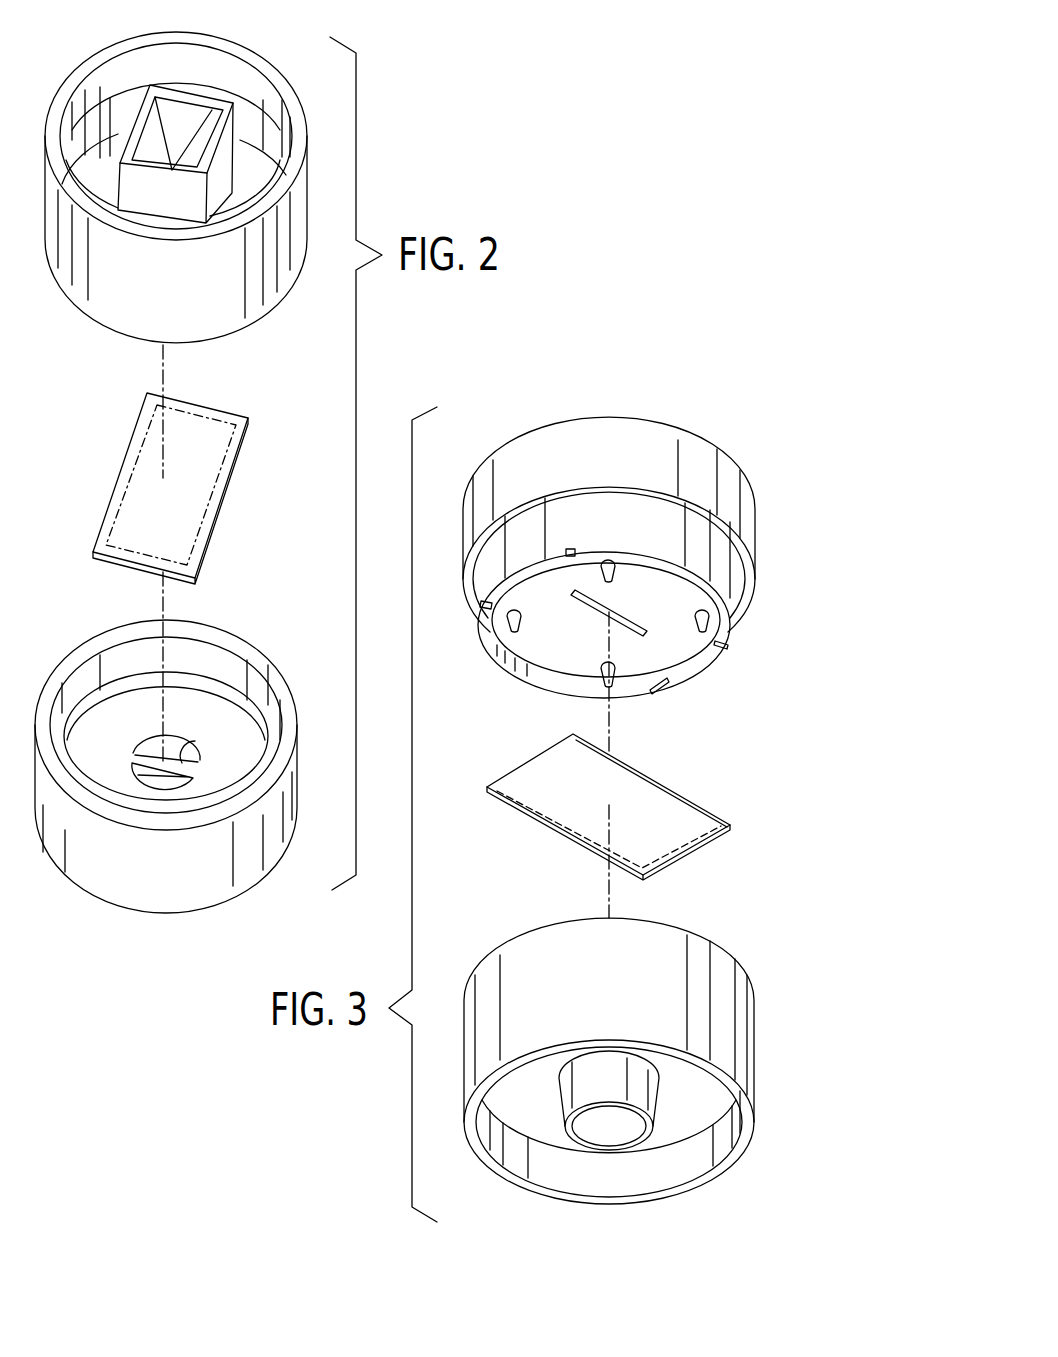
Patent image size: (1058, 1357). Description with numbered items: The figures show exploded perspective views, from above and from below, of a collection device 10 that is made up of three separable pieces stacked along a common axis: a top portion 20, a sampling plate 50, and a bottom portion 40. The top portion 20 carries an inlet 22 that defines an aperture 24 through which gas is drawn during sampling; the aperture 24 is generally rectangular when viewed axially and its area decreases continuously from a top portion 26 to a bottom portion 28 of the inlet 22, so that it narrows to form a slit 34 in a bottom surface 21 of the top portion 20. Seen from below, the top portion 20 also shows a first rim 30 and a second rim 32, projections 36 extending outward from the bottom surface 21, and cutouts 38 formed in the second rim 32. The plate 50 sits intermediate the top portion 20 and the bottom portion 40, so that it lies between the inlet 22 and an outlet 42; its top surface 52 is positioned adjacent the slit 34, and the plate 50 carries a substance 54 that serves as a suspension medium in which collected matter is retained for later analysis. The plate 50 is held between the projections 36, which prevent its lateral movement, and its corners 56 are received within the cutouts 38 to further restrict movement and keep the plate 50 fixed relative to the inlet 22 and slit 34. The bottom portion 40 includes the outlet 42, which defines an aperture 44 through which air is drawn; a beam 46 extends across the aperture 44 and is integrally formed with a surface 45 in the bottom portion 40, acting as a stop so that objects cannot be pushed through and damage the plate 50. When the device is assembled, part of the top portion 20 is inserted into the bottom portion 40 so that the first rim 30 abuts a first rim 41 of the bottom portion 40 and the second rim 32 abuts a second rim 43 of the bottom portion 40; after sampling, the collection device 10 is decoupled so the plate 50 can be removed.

In FIG. 2, the collection device 10 is at (96, 937).
In FIG. 3, the collection device 10 is at (644, 388).
In FIG. 2, the top portion 20 is at (178, 177).
In FIG. 3, the top portion 20 is at (608, 566).
In FIG. 2, the surface 21 is at (103, 180).
In FIG. 2, the inlet 22 is at (248, 138).
In FIG. 2, the aperture 24 is at (188, 118).
In FIG. 2, the top portion 26 is at (138, 122).
In FIG. 2, the bottom portion 28 is at (232, 150).
In FIG. 3, the first rim 30 is at (608, 625).
In FIG. 3, the second rim 32 is at (560, 695).
In FIG. 3, the slit 34 is at (600, 612).
In FIG. 3, the projections 36 is at (507, 623).
In FIG. 3, the cutouts 38 is at (570, 552).
In FIG. 2, the bottom portion 40 is at (175, 774).
In FIG. 3, the bottom portion 40 is at (607, 1061).
In FIG. 2, the first rim 41 is at (226, 638).
In FIG. 3, the outlet 42 is at (575, 1092).
In FIG. 2, the second rim 43 is at (235, 700).
In FIG. 2, the aperture 44 is at (191, 691).
In FIG. 3, the aperture 44 is at (618, 1132).
In FIG. 2, the surface 45 is at (100, 752).
In FIG. 2, the beam 46 is at (193, 745).
In FIG. 2, the sampling plate 50 is at (168, 483).
In FIG. 3, the sampling plate 50 is at (628, 807).
In FIG. 2, the top surface 52 is at (108, 542).
In FIG. 2, the substance 54 is at (180, 488).
In FIG. 2, the corners 56 is at (197, 577).
In FIG. 3, the corners 56 is at (697, 848).